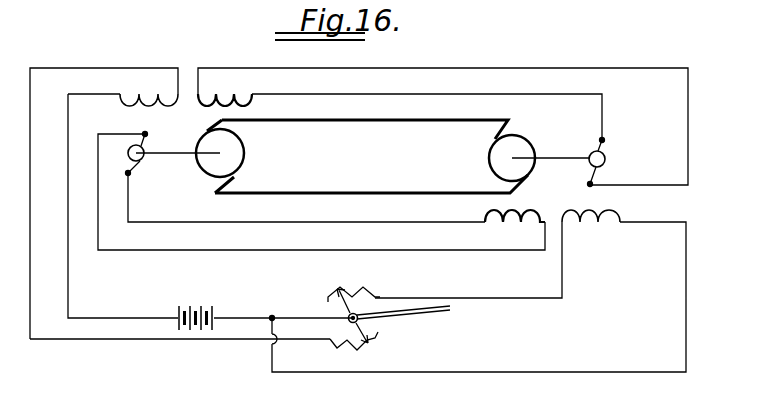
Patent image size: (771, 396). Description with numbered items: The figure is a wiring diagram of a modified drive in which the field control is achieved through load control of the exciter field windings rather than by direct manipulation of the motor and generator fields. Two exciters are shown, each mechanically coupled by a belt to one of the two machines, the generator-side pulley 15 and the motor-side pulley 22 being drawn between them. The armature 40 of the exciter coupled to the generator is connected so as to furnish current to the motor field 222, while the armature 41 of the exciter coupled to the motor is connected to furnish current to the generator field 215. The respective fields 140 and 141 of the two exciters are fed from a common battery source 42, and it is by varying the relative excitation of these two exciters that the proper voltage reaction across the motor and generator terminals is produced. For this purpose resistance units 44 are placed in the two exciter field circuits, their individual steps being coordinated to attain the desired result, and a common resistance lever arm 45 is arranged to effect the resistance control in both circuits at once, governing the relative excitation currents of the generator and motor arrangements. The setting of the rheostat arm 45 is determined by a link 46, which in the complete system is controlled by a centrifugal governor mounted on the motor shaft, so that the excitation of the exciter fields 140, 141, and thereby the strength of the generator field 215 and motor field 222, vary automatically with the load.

The exciter field 140 is at (149, 88).
The generator field 215 is at (225, 88).
The pulley 15 is at (246, 165).
The pulley 22 is at (487, 170).
The armature of the exciter coupled to the generator 40 is at (147, 158).
The armature of the exciter coupled to the motor 41 is at (605, 155).
The motor field 222 is at (511, 229).
The exciter field 141 is at (604, 232).
The battery source 42 is at (191, 300).
The resistance units 44 is at (343, 350).
The resistance lever arm 45 is at (363, 320).
The link 46 is at (442, 312).